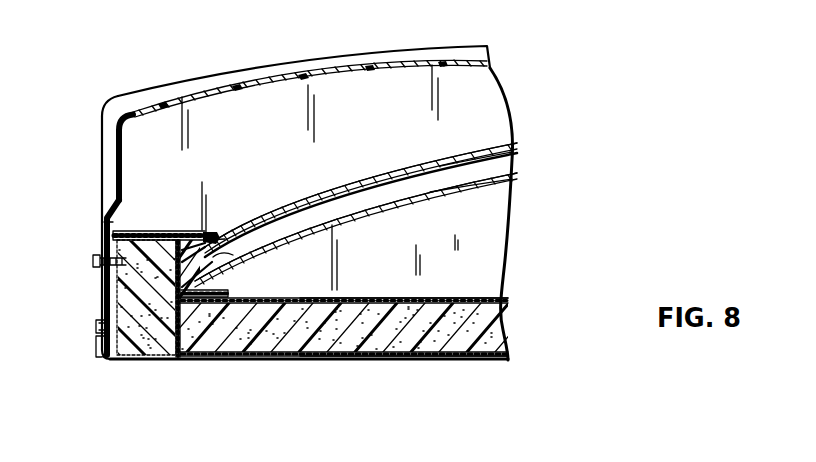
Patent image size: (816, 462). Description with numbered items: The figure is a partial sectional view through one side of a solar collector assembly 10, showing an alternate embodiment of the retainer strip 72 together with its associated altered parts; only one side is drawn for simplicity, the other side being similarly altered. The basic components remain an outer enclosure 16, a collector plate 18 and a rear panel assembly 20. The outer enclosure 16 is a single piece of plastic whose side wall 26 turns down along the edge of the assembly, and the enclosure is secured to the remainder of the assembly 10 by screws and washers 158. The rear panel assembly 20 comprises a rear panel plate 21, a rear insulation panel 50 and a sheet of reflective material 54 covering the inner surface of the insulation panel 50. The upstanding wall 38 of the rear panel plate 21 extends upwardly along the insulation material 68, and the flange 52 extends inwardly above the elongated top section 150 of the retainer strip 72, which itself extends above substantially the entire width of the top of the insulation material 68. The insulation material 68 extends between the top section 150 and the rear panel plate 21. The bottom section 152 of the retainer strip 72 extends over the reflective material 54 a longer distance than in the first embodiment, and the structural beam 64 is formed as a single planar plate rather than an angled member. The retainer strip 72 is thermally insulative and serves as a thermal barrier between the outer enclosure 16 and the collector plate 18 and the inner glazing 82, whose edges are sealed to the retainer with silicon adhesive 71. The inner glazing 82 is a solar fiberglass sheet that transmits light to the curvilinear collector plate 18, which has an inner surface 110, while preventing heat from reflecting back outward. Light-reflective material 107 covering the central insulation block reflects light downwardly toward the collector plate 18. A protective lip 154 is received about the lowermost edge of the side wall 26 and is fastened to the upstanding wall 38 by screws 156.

The solar collector assembly 10 is at (178, 63).
The outer enclosure 16 is at (353, 66).
The side wall 26 is at (102, 168).
The upstanding wall 38 is at (106, 228).
The screws and washers 158 is at (93, 262).
The screws 156 is at (97, 326).
The protective lip 154 is at (100, 362).
The flange 52 is at (131, 230).
The top section 150 is at (165, 230).
The insulation material 68 is at (142, 360).
The structural beam 64 is at (173, 360).
The retainer strip 72 is at (222, 209).
The silicon adhesive 71 is at (215, 236).
The inner glazing 82 is at (366, 175).
The collector plate 18 is at (376, 209).
The light-reflective material 107 is at (492, 175).
The inner surface 110 is at (469, 188).
The bottom section 152 is at (218, 290).
The sheet of reflective material 54 is at (462, 297).
The rear panel assembly 20 is at (288, 361).
The rear panel plate 21 is at (393, 360).
The rear insulation panel 50 is at (447, 354).